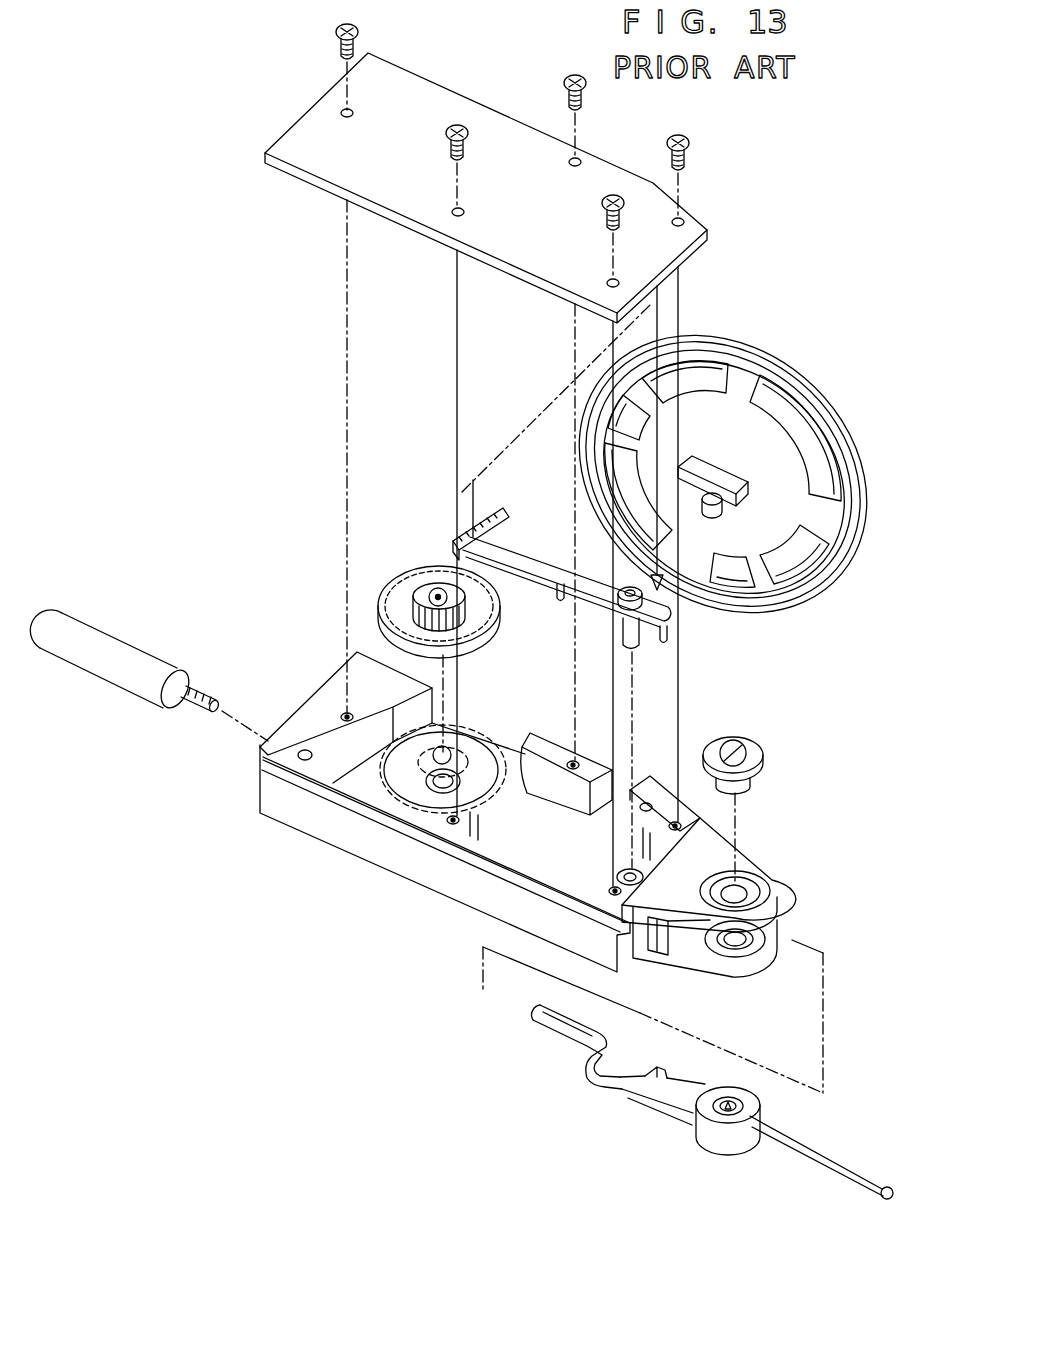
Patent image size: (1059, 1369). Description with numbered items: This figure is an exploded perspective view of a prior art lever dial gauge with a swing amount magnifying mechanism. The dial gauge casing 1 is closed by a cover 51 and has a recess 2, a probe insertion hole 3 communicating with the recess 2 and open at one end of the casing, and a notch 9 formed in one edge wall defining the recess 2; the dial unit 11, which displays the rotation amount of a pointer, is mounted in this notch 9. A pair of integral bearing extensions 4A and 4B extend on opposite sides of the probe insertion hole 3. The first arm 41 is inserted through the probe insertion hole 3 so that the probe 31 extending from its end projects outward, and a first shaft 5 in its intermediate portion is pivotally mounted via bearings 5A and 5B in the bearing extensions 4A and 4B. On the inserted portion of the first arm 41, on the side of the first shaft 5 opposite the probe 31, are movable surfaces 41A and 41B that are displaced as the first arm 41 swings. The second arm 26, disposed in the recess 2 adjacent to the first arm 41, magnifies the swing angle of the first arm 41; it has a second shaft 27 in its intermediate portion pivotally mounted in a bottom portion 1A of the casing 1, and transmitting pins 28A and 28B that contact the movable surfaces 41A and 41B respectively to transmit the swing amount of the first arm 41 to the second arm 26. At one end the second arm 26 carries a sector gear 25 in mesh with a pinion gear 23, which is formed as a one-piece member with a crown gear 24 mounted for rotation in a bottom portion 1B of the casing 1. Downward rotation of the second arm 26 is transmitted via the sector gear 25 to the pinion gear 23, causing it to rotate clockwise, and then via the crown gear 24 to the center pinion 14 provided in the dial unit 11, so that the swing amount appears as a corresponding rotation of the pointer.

The cover 51 is at (478, 97).
The dial unit 11 is at (882, 397).
The center pinion 14 is at (705, 518).
The crown gear 24 is at (398, 582).
The pinion gear 23 is at (420, 590).
The second arm 26 is at (530, 556).
The sector gear 25 is at (495, 505).
The transmitting pin 28B is at (561, 598).
The second shaft 27 is at (631, 648).
The transmitting pin 28A is at (666, 635).
The dial gauge casing 1 is at (352, 788).
The bottom portion 1A is at (553, 855).
The bottom portion 1B is at (447, 767).
The recess 2 is at (517, 830).
The notch 9 is at (522, 733).
The probe insertion hole 3 is at (660, 923).
The bearing extension 4A is at (747, 858).
The bearing extension 4B is at (718, 975).
The bearing 5A is at (758, 750).
The bearing 5B is at (752, 940).
The first arm 41 is at (637, 1097).
The movable surface 41A is at (652, 1055).
The movable surface 41B is at (560, 1037).
The first shaft 5 is at (724, 1113).
The probe 31 is at (793, 1157).